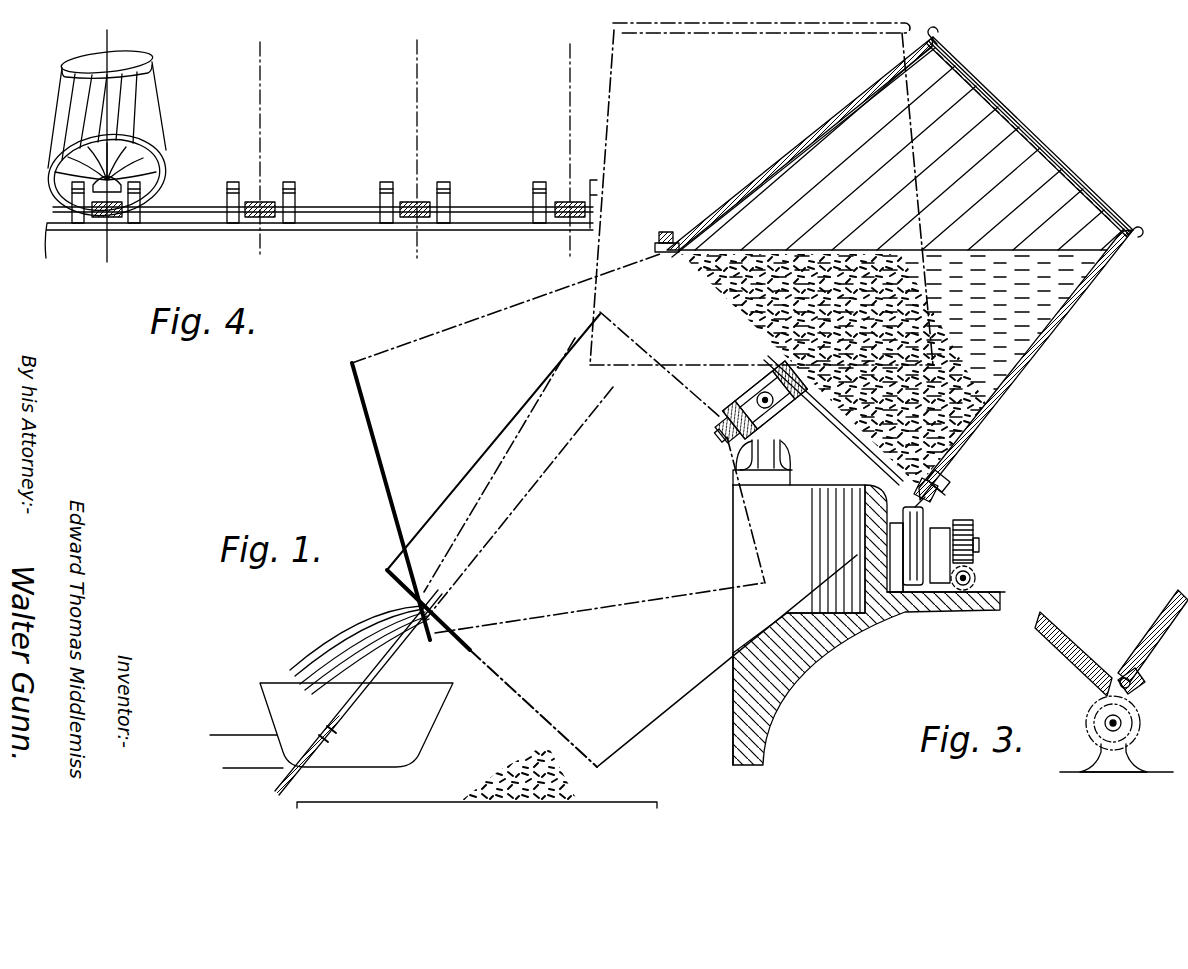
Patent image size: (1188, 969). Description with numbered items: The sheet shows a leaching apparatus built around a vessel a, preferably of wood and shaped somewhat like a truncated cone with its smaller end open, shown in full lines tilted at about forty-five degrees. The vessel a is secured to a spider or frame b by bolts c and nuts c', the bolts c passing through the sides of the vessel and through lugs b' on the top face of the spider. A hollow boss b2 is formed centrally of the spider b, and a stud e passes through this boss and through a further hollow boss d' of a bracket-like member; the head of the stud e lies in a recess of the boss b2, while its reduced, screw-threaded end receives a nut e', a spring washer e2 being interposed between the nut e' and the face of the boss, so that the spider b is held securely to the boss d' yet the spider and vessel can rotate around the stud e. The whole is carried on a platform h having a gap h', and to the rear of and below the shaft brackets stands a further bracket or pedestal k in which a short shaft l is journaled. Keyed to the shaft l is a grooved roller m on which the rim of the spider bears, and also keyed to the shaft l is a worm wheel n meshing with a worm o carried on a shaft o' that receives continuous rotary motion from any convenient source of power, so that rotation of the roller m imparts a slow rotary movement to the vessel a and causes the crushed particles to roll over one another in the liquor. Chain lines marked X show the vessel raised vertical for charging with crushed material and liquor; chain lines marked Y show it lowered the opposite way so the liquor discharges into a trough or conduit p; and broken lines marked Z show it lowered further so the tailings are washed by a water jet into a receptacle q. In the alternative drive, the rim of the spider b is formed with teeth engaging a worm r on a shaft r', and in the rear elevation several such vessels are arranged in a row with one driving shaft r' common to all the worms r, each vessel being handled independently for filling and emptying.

In FIG. 1, the vessel a is at (1080, 302).
In FIG. 3, the vessel a is at (1163, 620).
In FIG. 4, the vessel a is at (133, 95).
In FIG. 1, the spider b is at (833, 420).
In FIG. 3, the spider b is at (1083, 683).
In FIG. 4, the spider b is at (123, 159).
In FIG. 1, the lugs b' is at (976, 452).
In FIG. 1, the hollow boss b2 is at (798, 398).
In FIG. 1, the bolts c is at (957, 488).
In FIG. 1, the nuts c' is at (959, 475).
In FIG. 1, the hollow boss d' is at (731, 379).
In FIG. 1, the stud e is at (705, 442).
In FIG. 1, the nut e' is at (688, 434).
In FIG. 1, the spring washer e2 is at (720, 423).
In FIG. 1, the platform h is at (869, 625).
In FIG. 1, the gap h' is at (799, 526).
In FIG. 1, the bracket or pedestal k is at (945, 519).
In FIG. 1, the short shaft l is at (985, 545).
In FIG. 1, the grooved roller m is at (912, 595).
In FIG. 1, the worm wheel n is at (975, 568).
In FIG. 1, the worm o is at (987, 590).
In FIG. 1, the shaft o' is at (953, 613).
In FIG. 1, the trough or conduit p is at (331, 725).
In FIG. 1, the receptacle q is at (467, 797).
In FIG. 3, the worm r is at (1126, 712).
In FIG. 3, the shaft r' is at (1112, 750).
In FIG. 4, the shaft r' is at (321, 205).
In FIG. 1, the chain lines (vertical charging position) X is at (611, 81).
In FIG. 1, the chain lines (liquor discharge position) Y is at (407, 348).
In FIG. 1, the broken lines (tailings discharge position) Z is at (514, 683).